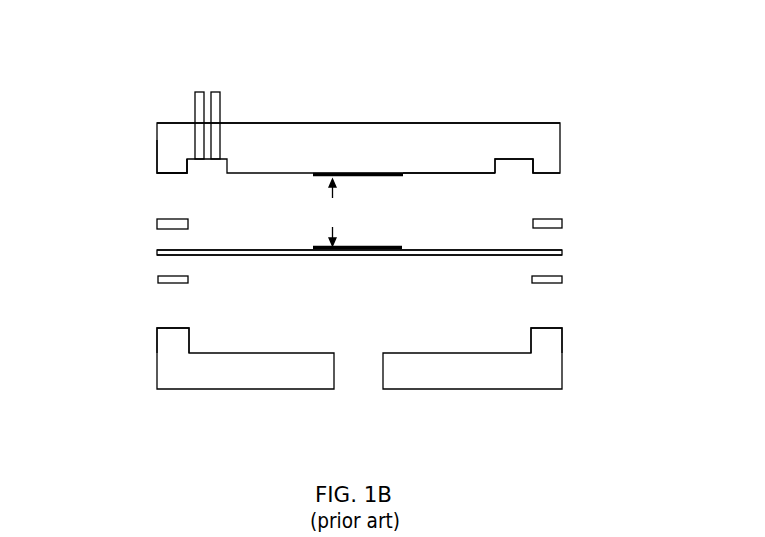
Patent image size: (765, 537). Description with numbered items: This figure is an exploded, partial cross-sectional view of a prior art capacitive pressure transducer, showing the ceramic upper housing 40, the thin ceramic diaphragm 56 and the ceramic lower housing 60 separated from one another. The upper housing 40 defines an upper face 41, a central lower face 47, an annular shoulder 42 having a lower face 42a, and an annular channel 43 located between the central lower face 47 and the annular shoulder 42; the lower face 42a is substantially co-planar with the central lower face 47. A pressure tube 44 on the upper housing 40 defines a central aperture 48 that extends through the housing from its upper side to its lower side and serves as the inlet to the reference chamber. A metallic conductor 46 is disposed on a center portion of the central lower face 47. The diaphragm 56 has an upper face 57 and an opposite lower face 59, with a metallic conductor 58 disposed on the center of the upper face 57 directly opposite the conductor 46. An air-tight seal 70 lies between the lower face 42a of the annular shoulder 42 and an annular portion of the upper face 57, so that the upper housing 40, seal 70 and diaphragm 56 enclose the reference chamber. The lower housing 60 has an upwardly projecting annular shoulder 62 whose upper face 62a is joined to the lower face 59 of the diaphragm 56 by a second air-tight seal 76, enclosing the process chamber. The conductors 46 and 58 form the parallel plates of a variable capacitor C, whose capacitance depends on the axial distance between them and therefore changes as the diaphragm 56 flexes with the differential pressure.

The upper housing 40 is at (480, 156).
The upper face 41 is at (350, 121).
The annular shoulder 42 is at (173, 163).
The lower face 42a is at (176, 175).
The annular channel 43 is at (522, 167).
The pressure tube 44 is at (200, 104).
The central aperture 48 is at (211, 92).
The metallic conductor 46 is at (350, 175).
The central lower face 47 is at (438, 174).
The variable capacitor C is at (333, 212).
The air-tight seal 70 is at (157, 222).
The diaphragm 56 is at (155, 252).
The upper face 57 is at (277, 250).
The metallic conductor 58 is at (378, 248).
The lower face 59 is at (282, 257).
The air-tight seal 76 is at (158, 279).
The annular shoulder 62 is at (173, 345).
The upper face 62a is at (172, 327).
The lower housing 60 is at (482, 383).